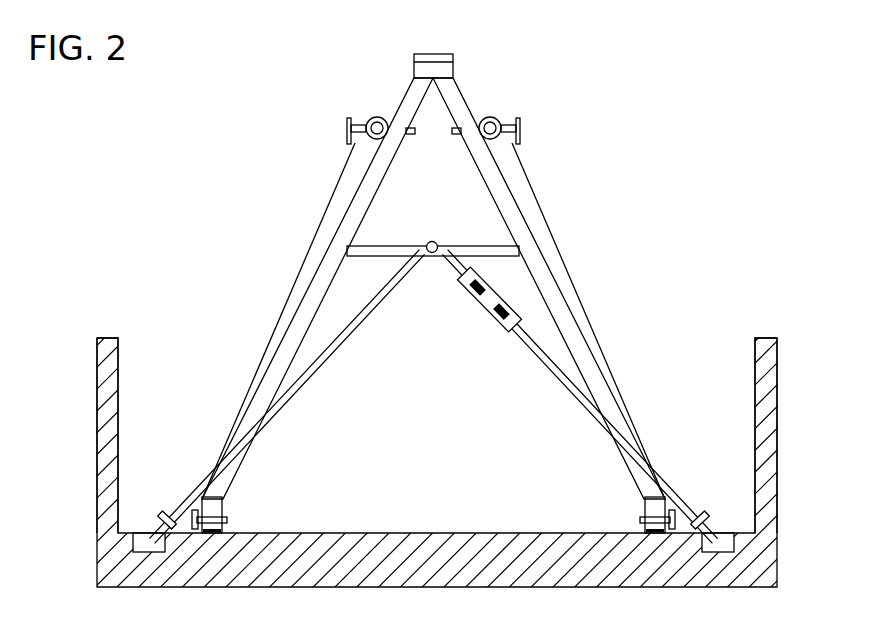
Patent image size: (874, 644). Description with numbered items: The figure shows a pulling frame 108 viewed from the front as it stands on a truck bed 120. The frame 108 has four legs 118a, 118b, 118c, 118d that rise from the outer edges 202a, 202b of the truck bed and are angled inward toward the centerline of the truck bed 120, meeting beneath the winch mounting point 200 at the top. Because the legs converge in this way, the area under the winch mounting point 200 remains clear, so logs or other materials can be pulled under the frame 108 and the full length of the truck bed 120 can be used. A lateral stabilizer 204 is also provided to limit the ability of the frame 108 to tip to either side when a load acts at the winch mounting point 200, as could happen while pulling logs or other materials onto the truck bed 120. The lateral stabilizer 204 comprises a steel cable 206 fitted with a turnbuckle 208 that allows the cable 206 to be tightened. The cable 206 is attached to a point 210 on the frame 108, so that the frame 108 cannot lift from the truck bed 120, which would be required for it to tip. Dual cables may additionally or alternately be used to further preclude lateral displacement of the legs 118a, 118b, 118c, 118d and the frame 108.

The frame 108 is at (452, 299).
The leg 118a is at (458, 108).
The leg 118b is at (410, 108).
The leg 118c is at (523, 198).
The leg 118d is at (337, 203).
The truck bed 120 is at (425, 535).
The winch mounting point 200 is at (452, 60).
The outer edge of the truck bed 202a is at (118, 343).
The outer edge of the truck bed 202b is at (778, 345).
The lateral stabilizer 204 is at (556, 384).
The steel cable 206 is at (318, 366).
The turnbuckle 208 is at (474, 304).
The point on the frame 210 is at (437, 243).